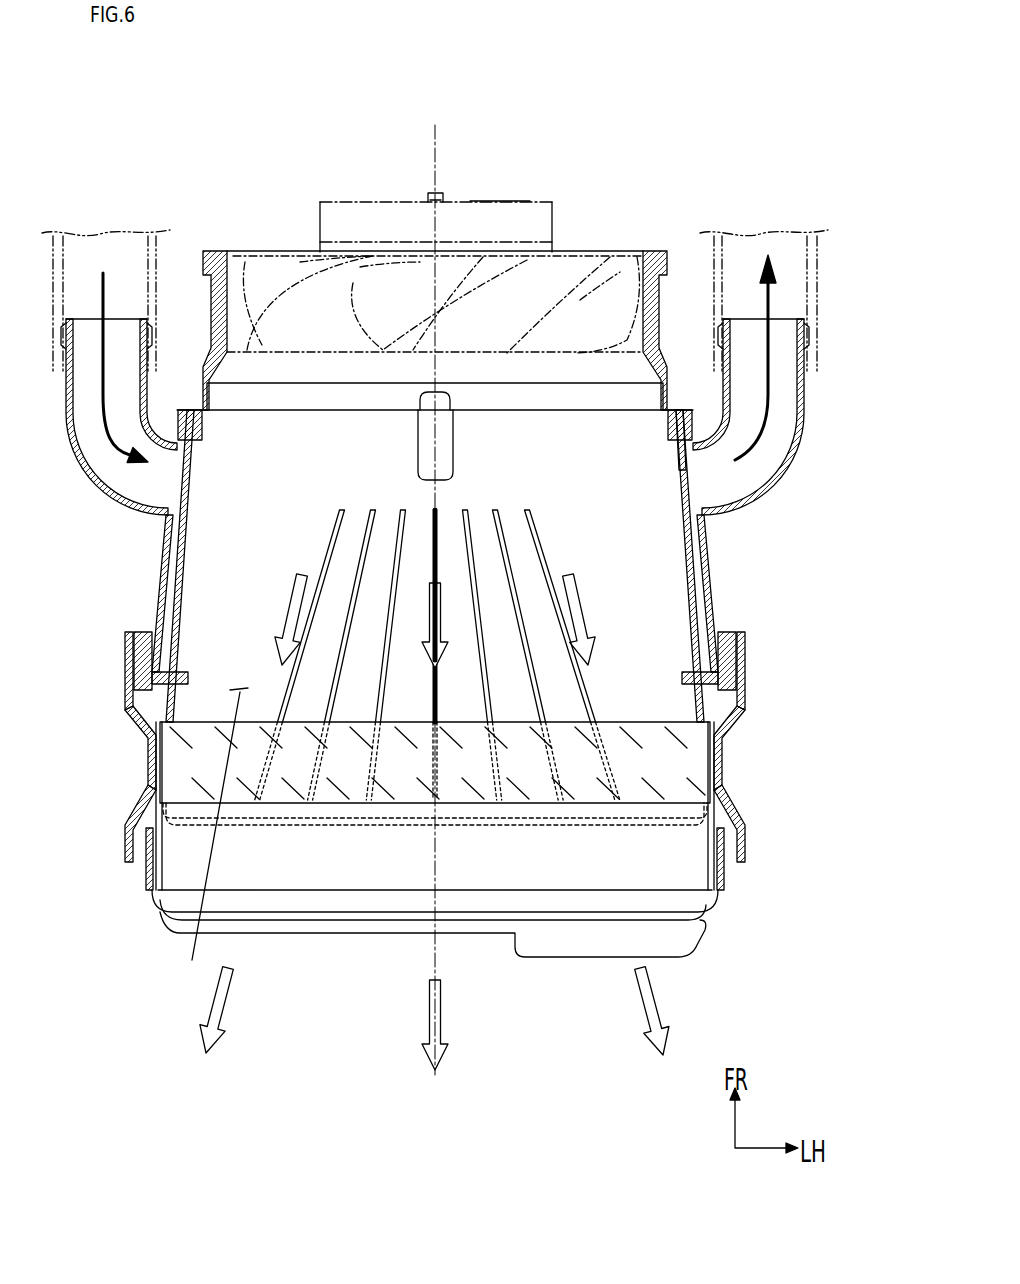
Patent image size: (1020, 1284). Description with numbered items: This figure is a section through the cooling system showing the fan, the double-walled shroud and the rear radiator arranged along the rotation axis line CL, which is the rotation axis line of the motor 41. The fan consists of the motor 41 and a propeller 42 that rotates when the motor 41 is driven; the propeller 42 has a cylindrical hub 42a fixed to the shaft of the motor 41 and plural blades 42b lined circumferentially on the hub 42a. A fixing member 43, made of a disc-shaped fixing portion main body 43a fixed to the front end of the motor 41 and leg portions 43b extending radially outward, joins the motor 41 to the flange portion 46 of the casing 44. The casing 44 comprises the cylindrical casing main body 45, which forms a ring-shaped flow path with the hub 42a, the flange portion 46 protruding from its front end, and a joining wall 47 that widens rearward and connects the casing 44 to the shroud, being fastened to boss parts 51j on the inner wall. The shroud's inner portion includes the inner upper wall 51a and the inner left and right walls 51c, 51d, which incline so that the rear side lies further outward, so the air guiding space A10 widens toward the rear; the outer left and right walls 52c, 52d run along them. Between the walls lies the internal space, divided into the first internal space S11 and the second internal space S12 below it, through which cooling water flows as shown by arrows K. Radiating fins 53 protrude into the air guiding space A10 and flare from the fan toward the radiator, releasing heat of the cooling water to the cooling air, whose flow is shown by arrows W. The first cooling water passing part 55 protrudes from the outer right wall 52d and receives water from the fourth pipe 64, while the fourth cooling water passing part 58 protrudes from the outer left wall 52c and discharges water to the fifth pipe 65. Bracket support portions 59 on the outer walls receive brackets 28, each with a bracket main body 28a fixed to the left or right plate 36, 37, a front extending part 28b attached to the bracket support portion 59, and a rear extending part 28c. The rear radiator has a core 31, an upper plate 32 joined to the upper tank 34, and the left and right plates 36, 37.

The rotation axis line CL is at (437, 126).
The motor 41 is at (545, 212).
The propeller 42 is at (690, 129).
The hub 42a is at (600, 268).
The blades 42b is at (621, 273).
The fixing member 43 is at (548, 141).
The fixing portion main body 43a is at (498, 201).
The leg portions 43b is at (443, 195).
The casing 44 is at (790, 166).
The casing main body 45 is at (669, 373).
The flange portion 46 is at (656, 303).
The joining wall 47 is at (675, 408).
The inner upper wall 51a is at (672, 530).
The inner left wall 51c is at (684, 558).
The inner right wall 51d is at (191, 563).
The boss parts 51j is at (454, 450).
The outer left wall 52c is at (713, 551).
The outer right wall 52d is at (163, 535).
The radiating fins 53 is at (538, 550).
The first cooling water passing part 55 is at (70, 420).
The fourth cooling water passing part 58 is at (793, 450).
The bracket support portions 59 is at (142, 633).
The brackets 28 is at (440, 747).
The bracket main body 28a is at (148, 762).
The front extending part 28b is at (124, 700).
The rear extending part 28c is at (439, 823).
The core 31 is at (626, 722).
The upper plate 32 is at (160, 912).
The upper tank 34 is at (293, 933).
The left plate 36 is at (145, 868).
The right plate 37 is at (727, 868).
The fourth pipe 64 is at (52, 256).
The fifth pipe 65 is at (818, 246).
The flow of cooling water K is at (103, 392).
The flow of cooling air W is at (296, 603).
The first internal space S11 is at (176, 590).
The second internal space S12 is at (703, 592).
The air guiding space A10 is at (208, 840).